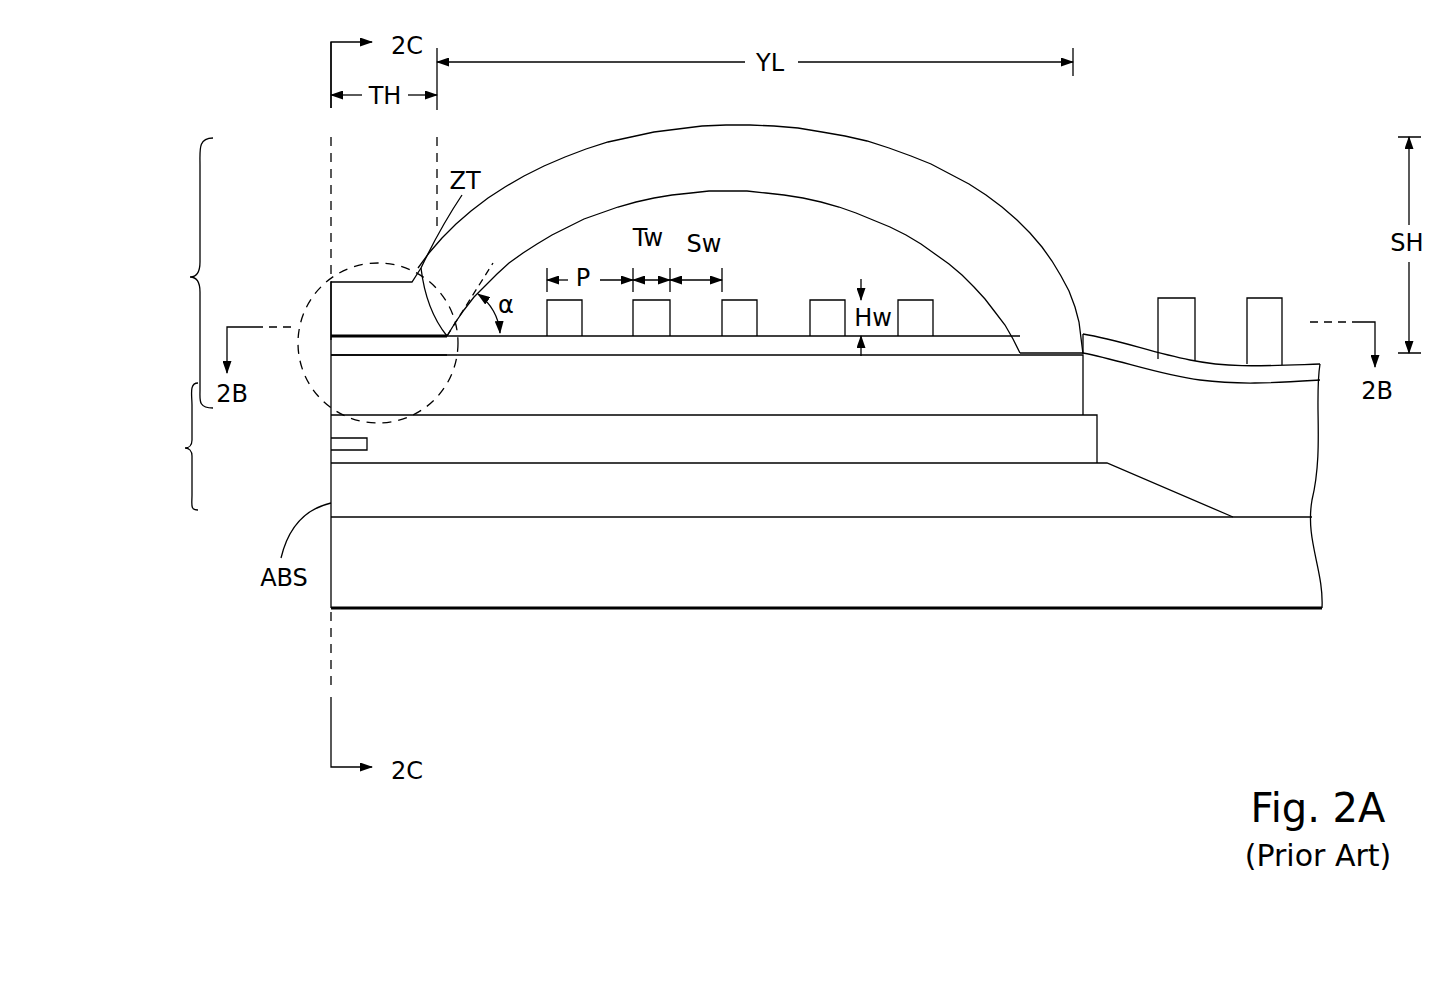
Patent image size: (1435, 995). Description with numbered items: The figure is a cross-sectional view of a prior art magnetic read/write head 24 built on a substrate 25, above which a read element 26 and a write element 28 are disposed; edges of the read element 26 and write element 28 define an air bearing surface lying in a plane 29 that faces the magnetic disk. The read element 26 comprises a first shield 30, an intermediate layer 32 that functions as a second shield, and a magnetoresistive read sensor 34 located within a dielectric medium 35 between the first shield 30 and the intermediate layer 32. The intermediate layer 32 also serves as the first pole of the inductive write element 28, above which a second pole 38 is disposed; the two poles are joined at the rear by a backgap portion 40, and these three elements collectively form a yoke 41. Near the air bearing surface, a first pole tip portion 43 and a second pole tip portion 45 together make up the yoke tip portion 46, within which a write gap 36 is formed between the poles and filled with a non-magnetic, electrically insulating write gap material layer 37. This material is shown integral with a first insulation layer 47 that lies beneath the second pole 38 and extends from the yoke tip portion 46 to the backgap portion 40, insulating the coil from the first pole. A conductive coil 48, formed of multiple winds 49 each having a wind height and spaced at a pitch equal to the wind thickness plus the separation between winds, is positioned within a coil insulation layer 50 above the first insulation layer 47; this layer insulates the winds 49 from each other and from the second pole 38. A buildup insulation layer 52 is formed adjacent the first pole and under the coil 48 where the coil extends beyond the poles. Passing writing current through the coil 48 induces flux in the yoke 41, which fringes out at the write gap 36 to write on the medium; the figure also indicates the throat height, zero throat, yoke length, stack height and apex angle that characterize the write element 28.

The magnetic read/write head 24 is at (1148, 57).
The substrate 25 is at (458, 572).
The read element 26 is at (174, 446).
The write element 28 is at (185, 273).
The plane 29 is at (331, 78).
The first shield 30 is at (458, 506).
The intermediate layer 32 is at (458, 404).
The read sensor 34 is at (367, 444).
The dielectric medium 35 is at (458, 454).
The write gap 36 is at (316, 336).
The write gap material layer 37 is at (348, 347).
The second pole 38 is at (839, 186).
The backgap portion 40 is at (1062, 328).
The yoke 41 is at (984, 171).
The first pole tip portion 43 is at (364, 392).
The second pole tip portion 45 is at (364, 319).
The yoke tip portion 46 is at (355, 262).
The first insulation layer 47 is at (557, 342).
The conductive coil 48 is at (768, 283).
The winds 49 is at (929, 331).
The coil insulation layer 50 is at (727, 231).
The buildup insulation layer 52 is at (1203, 462).